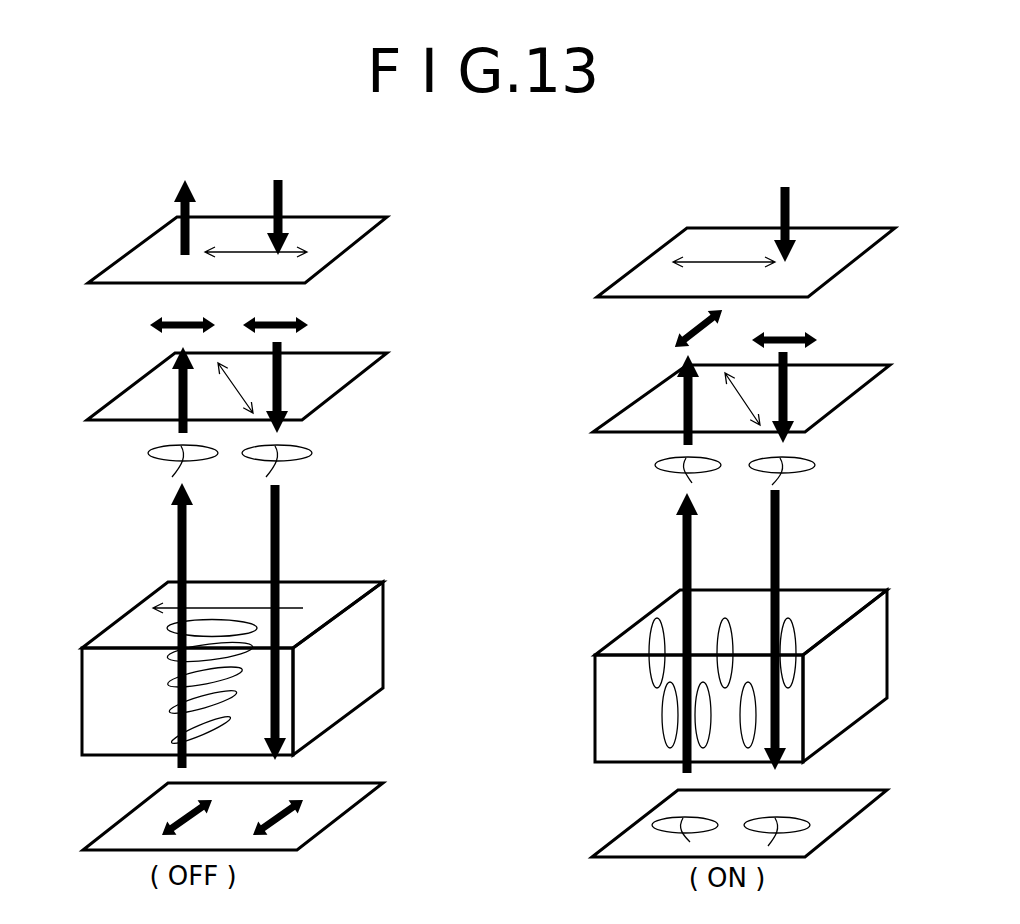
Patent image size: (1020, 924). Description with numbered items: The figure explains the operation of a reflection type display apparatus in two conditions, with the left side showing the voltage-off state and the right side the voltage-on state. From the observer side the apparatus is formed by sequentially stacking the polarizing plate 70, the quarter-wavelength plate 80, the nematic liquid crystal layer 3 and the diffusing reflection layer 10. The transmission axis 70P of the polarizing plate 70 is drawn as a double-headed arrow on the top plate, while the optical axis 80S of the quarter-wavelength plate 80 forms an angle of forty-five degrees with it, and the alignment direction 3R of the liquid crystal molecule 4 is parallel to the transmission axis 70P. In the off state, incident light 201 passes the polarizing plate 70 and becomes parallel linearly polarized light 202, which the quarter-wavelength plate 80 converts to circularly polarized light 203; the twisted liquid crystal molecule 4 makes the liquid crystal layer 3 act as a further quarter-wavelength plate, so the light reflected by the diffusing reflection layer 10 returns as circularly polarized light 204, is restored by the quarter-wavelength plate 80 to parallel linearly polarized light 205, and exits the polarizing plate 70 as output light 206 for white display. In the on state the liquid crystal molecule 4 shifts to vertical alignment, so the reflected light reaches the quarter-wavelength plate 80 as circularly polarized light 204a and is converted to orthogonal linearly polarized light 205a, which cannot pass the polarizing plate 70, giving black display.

The nematic liquid crystal layer 3 is at (103, 727).
The alignment direction 3R is at (233, 608).
The liquid crystal molecule 4 is at (172, 682).
The diffusing reflection layer 10 is at (138, 818).
The polarizing plate 70 is at (130, 265).
The transmission axis 70P is at (240, 252).
The quarter-wavelength plate 80 is at (128, 407).
The optical axis 80S is at (238, 390).
The incident light 201 is at (287, 200).
The parallel linearly polarized light 202 is at (282, 370).
The circularly polarized light 203 is at (282, 545).
The circularly polarized light 204 is at (178, 527).
The circularly polarized light 204a is at (683, 555).
The parallel linearly polarized light 205 is at (177, 393).
The orthogonal linearly polarized light 205a is at (680, 400).
The output light 206 is at (180, 240).